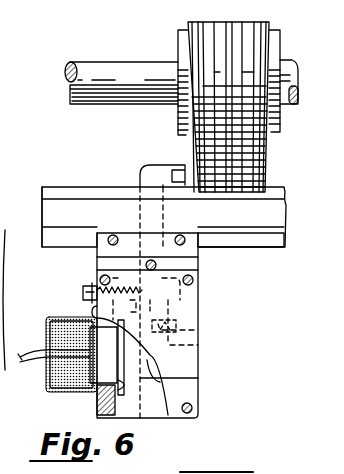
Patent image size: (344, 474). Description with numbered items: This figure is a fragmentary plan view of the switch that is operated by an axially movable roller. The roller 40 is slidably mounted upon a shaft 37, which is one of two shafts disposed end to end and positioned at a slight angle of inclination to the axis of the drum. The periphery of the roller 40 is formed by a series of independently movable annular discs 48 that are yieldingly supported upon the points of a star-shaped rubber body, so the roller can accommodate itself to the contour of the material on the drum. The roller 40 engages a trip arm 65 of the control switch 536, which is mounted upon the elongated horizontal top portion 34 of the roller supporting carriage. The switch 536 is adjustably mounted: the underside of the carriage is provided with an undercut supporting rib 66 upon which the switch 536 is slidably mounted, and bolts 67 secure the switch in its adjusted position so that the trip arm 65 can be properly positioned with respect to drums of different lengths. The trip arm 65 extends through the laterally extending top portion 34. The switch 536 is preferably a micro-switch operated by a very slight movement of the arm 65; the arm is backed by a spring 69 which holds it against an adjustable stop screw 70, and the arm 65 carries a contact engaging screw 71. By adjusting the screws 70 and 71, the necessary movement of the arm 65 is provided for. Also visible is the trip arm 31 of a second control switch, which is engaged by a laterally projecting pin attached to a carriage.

The trip arm 31 is at (3, 255).
The top portion 34 is at (65, 190).
The shaft 37 is at (96, 62).
The roller 40 is at (182, 40).
The annular discs 48 is at (222, 108).
The trip arm 65 is at (146, 174).
The undercut supporting rib 66 is at (240, 238).
The bolts 67 is at (180, 236).
The spring 69 is at (198, 330).
The adjustable stop screw 70 is at (82, 292).
The contact engaging screw 71 is at (198, 378).
The control switch 536 is at (44, 376).